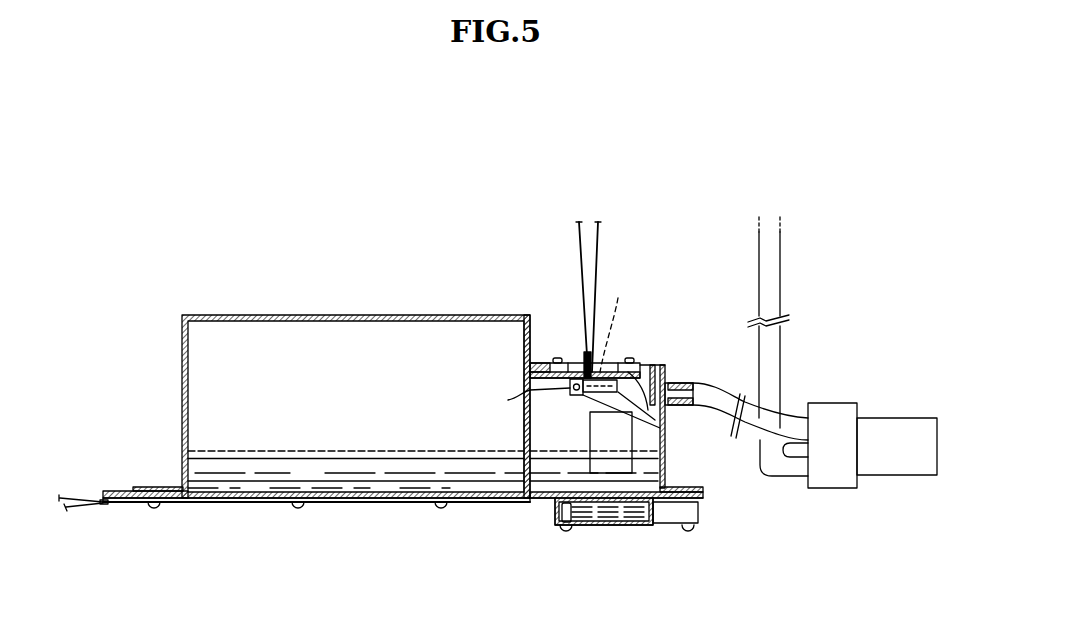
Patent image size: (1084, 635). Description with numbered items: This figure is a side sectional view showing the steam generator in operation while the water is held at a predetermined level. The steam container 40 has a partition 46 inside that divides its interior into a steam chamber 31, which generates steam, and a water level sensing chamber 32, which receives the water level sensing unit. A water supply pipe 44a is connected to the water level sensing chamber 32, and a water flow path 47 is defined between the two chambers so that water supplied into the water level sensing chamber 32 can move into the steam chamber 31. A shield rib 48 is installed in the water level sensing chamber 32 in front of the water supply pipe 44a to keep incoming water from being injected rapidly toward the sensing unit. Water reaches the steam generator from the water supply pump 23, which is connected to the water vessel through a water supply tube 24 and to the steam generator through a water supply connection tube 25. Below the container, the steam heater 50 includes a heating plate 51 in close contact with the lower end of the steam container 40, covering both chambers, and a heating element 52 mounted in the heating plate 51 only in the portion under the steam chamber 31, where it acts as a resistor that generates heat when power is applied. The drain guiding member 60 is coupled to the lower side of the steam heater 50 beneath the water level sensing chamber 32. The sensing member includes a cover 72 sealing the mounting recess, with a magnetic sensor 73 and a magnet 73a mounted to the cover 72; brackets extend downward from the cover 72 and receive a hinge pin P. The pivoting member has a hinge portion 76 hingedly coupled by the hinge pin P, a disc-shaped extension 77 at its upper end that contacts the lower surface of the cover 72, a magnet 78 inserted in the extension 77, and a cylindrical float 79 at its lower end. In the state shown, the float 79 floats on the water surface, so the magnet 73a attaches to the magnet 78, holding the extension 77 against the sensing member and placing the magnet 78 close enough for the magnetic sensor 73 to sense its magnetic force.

The steam container 40 is at (378, 314).
The steam chamber 31 is at (370, 397).
The partition 46 is at (527, 370).
The water level sensing chamber 32 is at (565, 434).
The shield rib 48 is at (657, 367).
The water flow path 47 is at (513, 500).
The cover 72 is at (620, 362).
The magnetic sensor 73 is at (582, 379).
The magnet 73a is at (620, 325).
The hinge pin P is at (532, 399).
The water supply pipe 44a is at (673, 383).
The magnet 78 is at (667, 430).
The extension 77 is at (663, 450).
The float 79 is at (614, 455).
The hinge portion 76 is at (588, 405).
The drain guiding member 60 is at (700, 522).
The heating element 52 is at (225, 503).
The heating plate 51 is at (110, 490).
The steam heater 50 is at (130, 506).
The water supply tube 24 is at (776, 356).
The water supply connection tube 25 is at (754, 430).
The water supply pump 23 is at (886, 418).